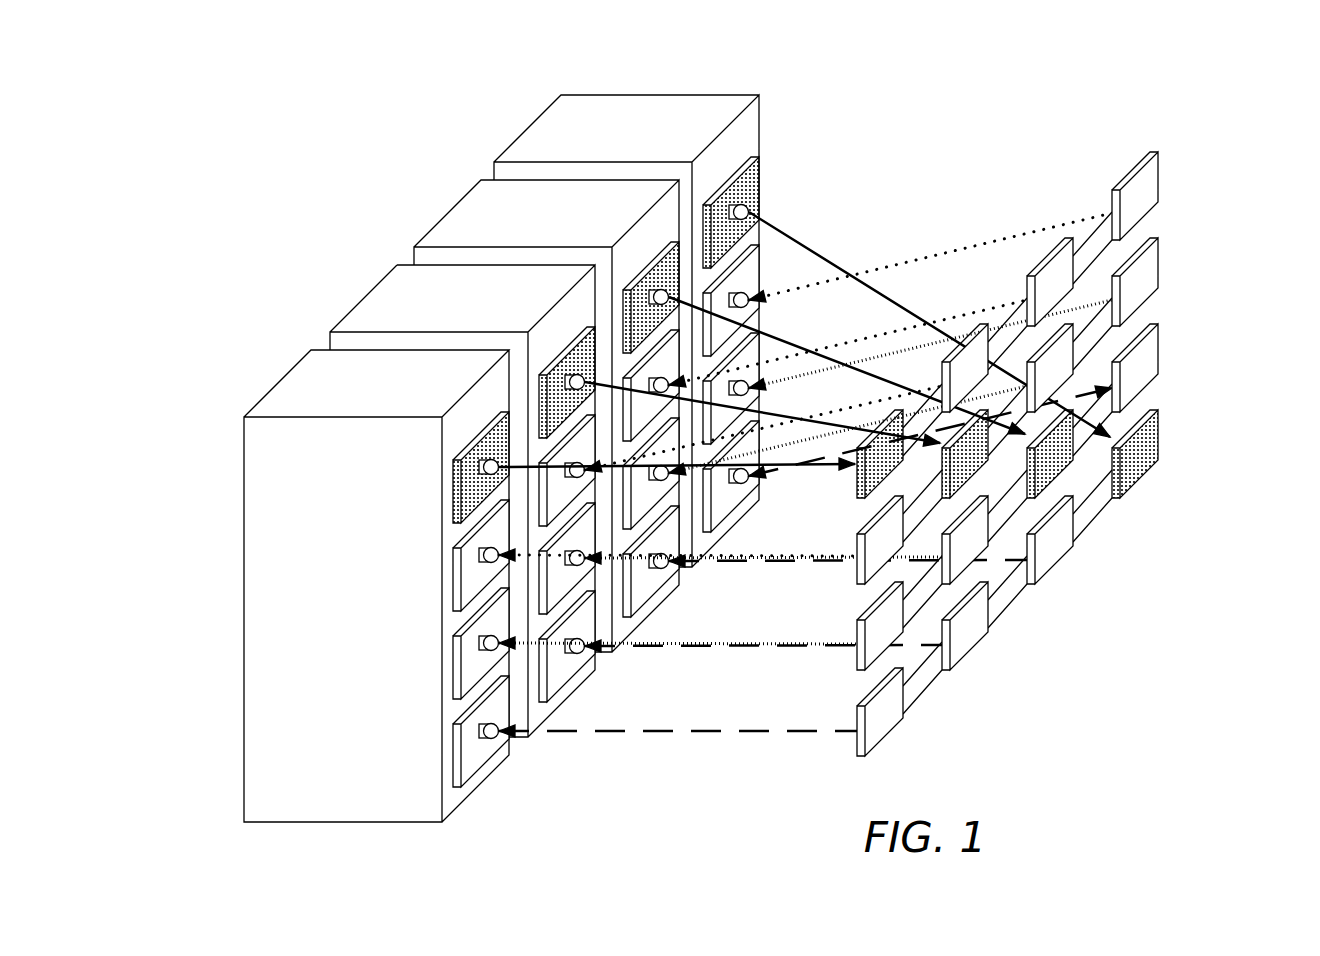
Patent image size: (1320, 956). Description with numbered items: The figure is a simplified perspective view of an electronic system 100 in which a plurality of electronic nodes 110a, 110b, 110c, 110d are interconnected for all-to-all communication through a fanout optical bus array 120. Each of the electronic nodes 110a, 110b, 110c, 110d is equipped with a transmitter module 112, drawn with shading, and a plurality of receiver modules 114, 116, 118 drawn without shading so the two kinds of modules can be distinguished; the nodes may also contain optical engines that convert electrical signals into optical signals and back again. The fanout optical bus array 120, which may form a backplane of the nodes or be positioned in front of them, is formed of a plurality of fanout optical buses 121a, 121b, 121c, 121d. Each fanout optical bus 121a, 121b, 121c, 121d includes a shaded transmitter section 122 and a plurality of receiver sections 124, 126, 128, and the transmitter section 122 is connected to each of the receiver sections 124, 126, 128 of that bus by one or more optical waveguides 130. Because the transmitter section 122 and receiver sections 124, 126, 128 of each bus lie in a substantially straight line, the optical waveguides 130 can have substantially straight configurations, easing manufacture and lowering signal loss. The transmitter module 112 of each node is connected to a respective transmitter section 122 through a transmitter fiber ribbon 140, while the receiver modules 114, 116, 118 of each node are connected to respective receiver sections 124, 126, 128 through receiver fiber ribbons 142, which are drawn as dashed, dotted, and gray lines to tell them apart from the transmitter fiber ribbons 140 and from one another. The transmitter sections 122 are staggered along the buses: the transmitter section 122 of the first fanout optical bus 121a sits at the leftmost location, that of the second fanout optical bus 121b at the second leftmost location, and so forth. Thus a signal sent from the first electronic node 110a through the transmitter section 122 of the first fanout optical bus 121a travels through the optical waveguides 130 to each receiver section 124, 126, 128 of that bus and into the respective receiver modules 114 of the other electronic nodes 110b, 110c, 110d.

The electronic system 100 is at (323, 147).
The electronic node 110a is at (275, 386).
The electronic node 110b is at (365, 295).
The electronic node 110c is at (450, 210).
The electronic node 110d is at (528, 132).
The transmitter module 112 is at (453, 490).
The receiver module 114 is at (453, 578).
The receiver module 116 is at (453, 666).
The receiver module 118 is at (453, 754).
The fanout optical bus array 120 is at (990, 170).
The fanout optical bus 121a is at (1172, 157).
The fanout optical bus 121b is at (1172, 255).
The fanout optical bus 121c is at (1172, 345).
The fanout optical bus 121d is at (1079, 553).
The transmitter section 122 is at (856, 497).
The receiver section 124 is at (967, 327).
The receiver section 126 is at (1047, 258).
The receiver section 128 is at (1137, 170).
The optical waveguide 130 is at (928, 678).
The transmitter fiber ribbon 140 is at (810, 245).
The receiver fiber ribbon 142 is at (867, 268).